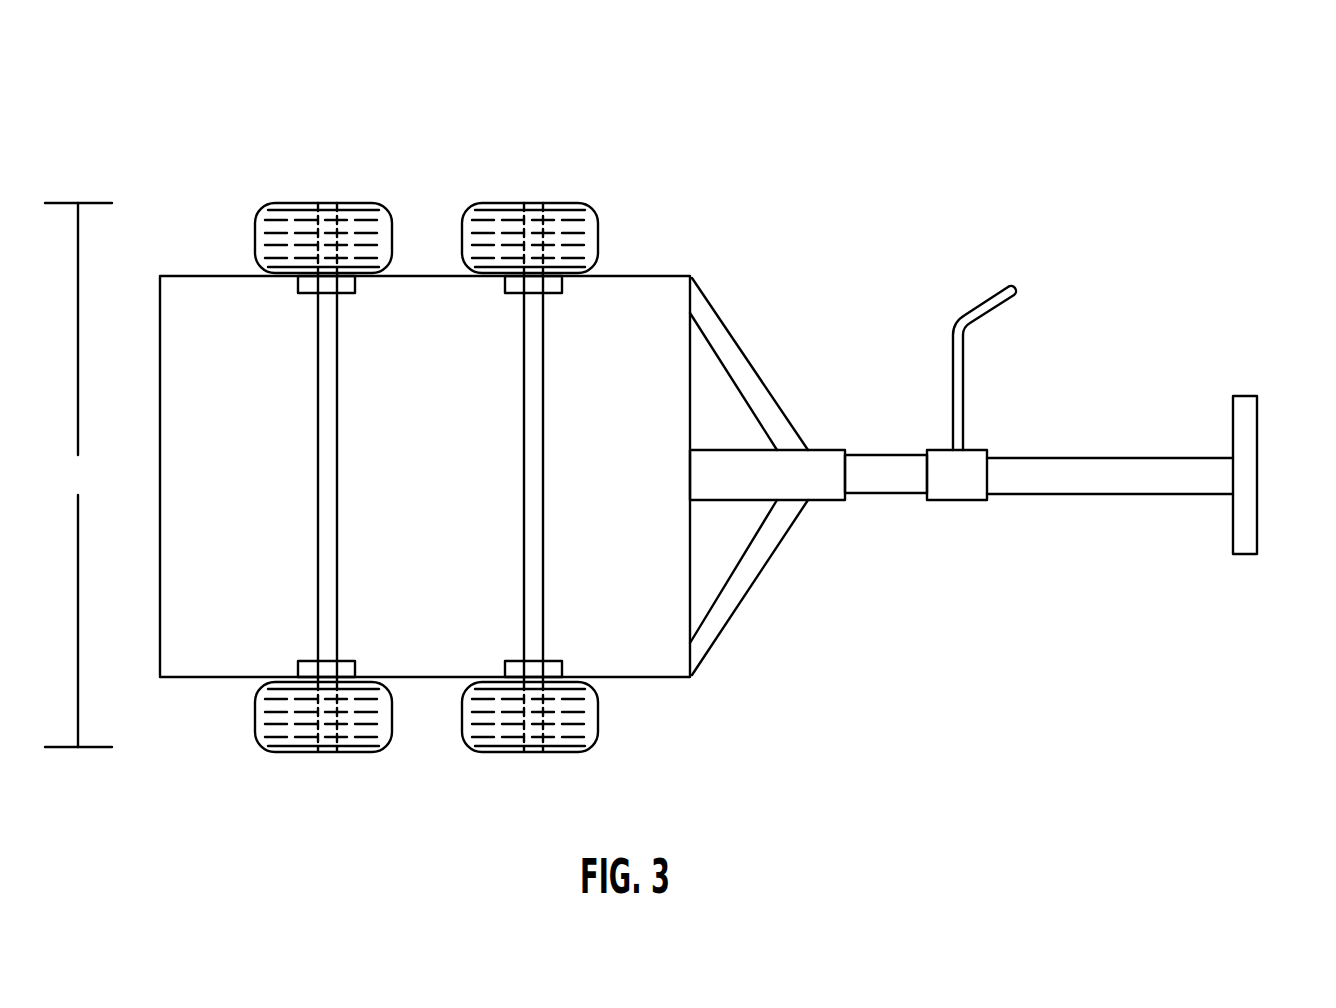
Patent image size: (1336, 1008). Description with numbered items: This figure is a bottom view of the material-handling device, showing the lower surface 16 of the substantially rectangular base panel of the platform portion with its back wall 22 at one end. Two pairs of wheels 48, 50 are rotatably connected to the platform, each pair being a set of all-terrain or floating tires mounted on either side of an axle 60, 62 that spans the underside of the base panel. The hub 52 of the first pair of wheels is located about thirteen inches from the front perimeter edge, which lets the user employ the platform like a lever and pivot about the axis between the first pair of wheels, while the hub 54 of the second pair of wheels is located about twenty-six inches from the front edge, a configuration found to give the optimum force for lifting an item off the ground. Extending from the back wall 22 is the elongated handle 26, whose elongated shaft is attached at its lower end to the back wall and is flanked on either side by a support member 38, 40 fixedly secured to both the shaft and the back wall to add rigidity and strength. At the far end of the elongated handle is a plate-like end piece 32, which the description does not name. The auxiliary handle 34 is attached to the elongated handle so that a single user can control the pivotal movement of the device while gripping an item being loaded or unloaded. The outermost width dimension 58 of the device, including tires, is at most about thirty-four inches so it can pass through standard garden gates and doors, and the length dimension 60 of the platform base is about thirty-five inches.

The lower surface 16 is at (618, 518).
The back wall 22 is at (785, 482).
The elongated handle 26 is at (1089, 440).
The hitch plate 32 is at (1258, 529).
The auxiliary handle 34 is at (982, 403).
The support member 38 is at (771, 561).
The support member 40 is at (751, 364).
The pair of wheels 48 is at (424, 431).
The pair of wheels 50 is at (582, 479).
The hub 52 is at (326, 203).
The hub 54 is at (533, 203).
The outermost width dimension 58 is at (78, 475).
The axle 60 is at (337, 520).
The axle 62 is at (543, 372).